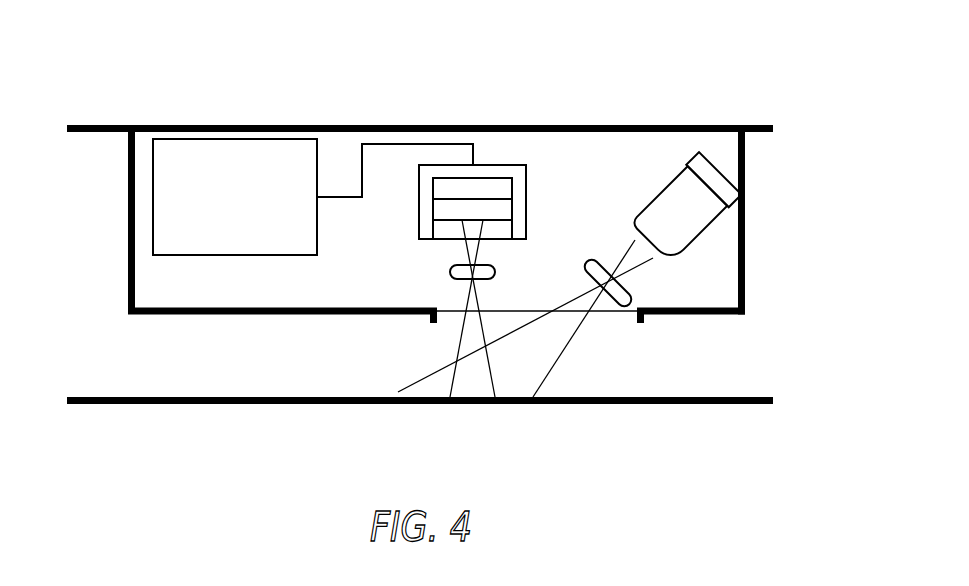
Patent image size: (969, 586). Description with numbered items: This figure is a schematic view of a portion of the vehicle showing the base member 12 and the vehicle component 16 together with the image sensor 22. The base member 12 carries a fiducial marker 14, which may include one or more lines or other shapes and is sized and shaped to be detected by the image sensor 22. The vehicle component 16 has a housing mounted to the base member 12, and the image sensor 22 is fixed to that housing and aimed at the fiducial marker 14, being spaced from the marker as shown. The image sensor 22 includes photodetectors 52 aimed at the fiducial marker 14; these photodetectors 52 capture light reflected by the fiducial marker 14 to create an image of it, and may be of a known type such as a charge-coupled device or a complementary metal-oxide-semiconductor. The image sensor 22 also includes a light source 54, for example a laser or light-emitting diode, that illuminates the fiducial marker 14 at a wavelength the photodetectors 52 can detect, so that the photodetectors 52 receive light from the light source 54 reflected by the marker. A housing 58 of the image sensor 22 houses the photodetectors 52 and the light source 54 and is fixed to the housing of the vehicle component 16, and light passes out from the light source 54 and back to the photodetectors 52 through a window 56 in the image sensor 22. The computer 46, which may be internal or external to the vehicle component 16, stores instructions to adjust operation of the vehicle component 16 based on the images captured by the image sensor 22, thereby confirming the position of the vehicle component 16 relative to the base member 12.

The base member 12 is at (143, 405).
The fiducial marker 14 is at (475, 388).
The vehicle component 16 is at (160, 125).
The image sensor 22 is at (772, 180).
The computer 46 is at (153, 226).
The photodetectors 52 is at (508, 165).
The light source 54 is at (697, 238).
The mirror 56 is at (600, 315).
The housing 58 is at (128, 288).